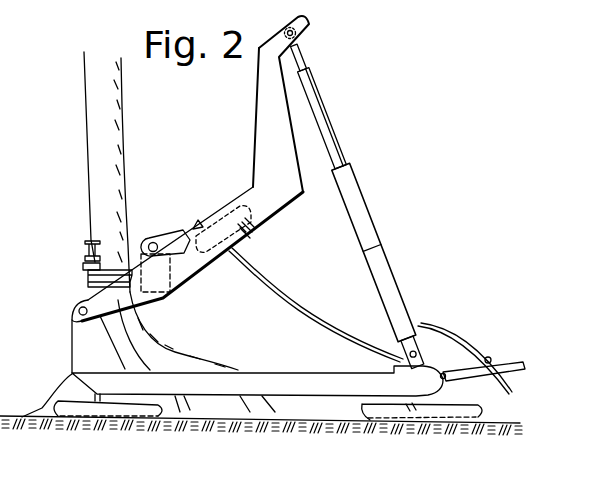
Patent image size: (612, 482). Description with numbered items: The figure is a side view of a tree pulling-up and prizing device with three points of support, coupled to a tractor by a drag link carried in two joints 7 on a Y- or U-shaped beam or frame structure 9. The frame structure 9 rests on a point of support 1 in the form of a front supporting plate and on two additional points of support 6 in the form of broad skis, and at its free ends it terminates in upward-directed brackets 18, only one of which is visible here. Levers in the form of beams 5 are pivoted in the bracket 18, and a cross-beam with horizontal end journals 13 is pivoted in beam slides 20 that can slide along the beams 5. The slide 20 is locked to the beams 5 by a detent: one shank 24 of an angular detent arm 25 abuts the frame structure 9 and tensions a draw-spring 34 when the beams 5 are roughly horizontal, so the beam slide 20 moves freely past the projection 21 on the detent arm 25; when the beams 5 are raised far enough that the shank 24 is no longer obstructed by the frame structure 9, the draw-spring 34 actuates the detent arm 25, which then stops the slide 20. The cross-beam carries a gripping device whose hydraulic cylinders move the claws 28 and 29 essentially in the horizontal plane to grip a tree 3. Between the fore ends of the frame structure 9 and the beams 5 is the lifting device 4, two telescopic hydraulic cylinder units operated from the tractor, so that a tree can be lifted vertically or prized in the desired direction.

The point of support 1 is at (480, 420).
The tree trunk 3 is at (110, 136).
The lifting device 4 is at (368, 230).
The beams 5 is at (268, 115).
The points of support 6 is at (155, 424).
The joints 7 is at (446, 383).
The beam or frame structure 9 is at (270, 380).
The end journals 13 is at (188, 253).
The bracket 18 is at (87, 339).
The beam slide 20 is at (172, 242).
The projection 21 is at (198, 222).
The shank 24 is at (265, 240).
The detent arm 25 is at (222, 210).
The claw 28 is at (85, 280).
The claw 29 is at (85, 253).
The draw-spring 34 is at (252, 254).